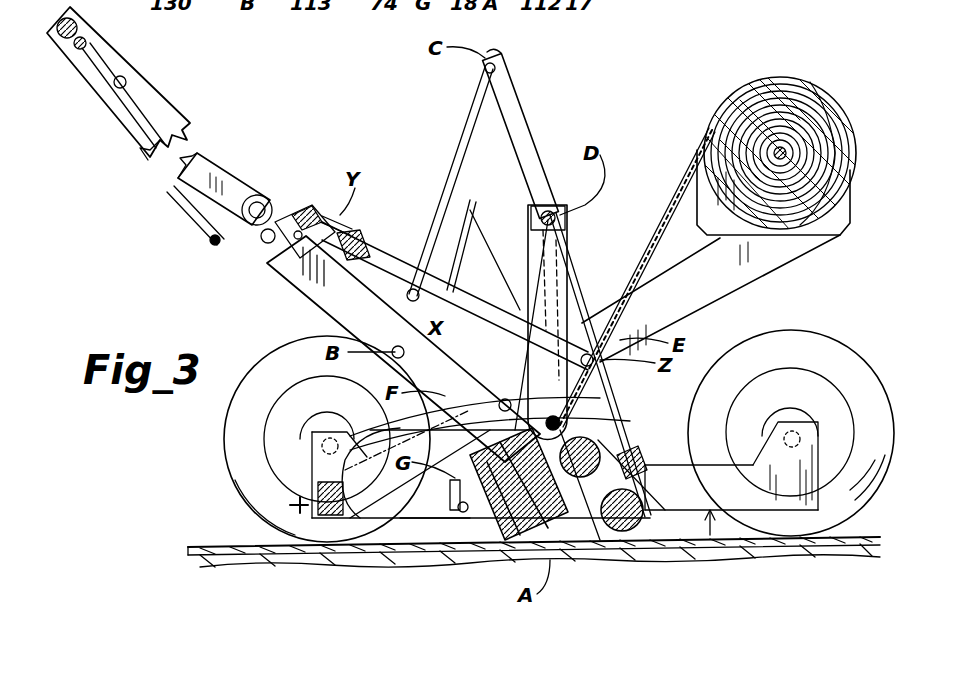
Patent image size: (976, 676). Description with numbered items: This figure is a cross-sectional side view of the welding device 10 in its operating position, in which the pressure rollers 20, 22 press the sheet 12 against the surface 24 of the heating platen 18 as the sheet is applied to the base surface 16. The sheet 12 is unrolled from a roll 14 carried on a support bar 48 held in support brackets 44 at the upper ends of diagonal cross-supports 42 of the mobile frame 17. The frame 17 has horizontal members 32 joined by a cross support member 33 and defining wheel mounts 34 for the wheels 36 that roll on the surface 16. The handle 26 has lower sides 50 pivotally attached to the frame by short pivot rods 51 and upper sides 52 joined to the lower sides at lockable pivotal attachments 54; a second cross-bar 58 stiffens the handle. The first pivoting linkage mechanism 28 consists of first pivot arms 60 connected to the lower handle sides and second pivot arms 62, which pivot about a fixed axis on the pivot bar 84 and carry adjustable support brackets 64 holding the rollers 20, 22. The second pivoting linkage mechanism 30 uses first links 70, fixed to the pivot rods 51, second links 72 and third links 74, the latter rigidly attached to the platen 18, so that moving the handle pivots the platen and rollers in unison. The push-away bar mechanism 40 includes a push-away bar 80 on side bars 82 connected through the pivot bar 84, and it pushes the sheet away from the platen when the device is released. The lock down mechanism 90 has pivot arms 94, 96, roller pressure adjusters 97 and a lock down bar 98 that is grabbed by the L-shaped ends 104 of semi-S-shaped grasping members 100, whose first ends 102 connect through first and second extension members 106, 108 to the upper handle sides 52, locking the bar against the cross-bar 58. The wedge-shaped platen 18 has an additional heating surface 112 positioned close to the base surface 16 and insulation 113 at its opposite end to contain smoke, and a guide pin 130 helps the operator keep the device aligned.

The welding device 10 is at (648, 38).
The sheet 12 is at (636, 277).
The roll of sheet material 14 is at (758, 78).
The base surface 16 is at (190, 547).
The mobile frame 17 is at (720, 548).
The heating platen 18 is at (520, 545).
The pressure roller 20 is at (648, 447).
The pressure roller 22 is at (640, 548).
The surface of heating platen 24 is at (605, 548).
The handle 26 is at (165, 85).
The first pivoting linkage mechanism 28 is at (517, 80).
The second pivoting linkage mechanism 30 is at (500, 405).
The horizontal member 32 is at (318, 552).
The cross support member 33 is at (275, 555).
The wheel mount 34 is at (312, 460).
The wheel 36 is at (226, 428).
The push-away bar mechanism 40 is at (565, 262).
The diagonal cross-support 42 is at (722, 282).
The support bracket 44 is at (842, 240).
The support bar 48 is at (837, 48).
The lower handle side 50 is at (325, 298).
The pivot rod 51 is at (460, 548).
The upper handle side 52 is at (137, 80).
The pivotal attachment 54 is at (225, 172).
The second cross-bar 58 is at (275, 262).
The first pivot arm 60 is at (466, 137).
The second pivot arm 62 is at (517, 130).
The adjustable support bracket 64 is at (675, 548).
The first link 70 is at (600, 398).
The second link 72 is at (505, 400).
The third link 74 is at (400, 425).
The push-away bar 80 is at (630, 421).
The side bar 82 is at (530, 273).
The pivot bar 84 is at (557, 207).
The lock down mechanism 90 is at (445, 268).
The first pivot arm of lock down mechanism 94 is at (450, 260).
The second pivot arm of lock down mechanism 96 is at (390, 257).
The roller pressure adjuster 97 is at (345, 215).
The lock down bar 98 is at (322, 205).
The grasping member 100 is at (258, 198).
The first end of grasping member 102 is at (215, 238).
The L-shaped end 104 is at (303, 200).
The first extension member 106 is at (142, 152).
The second extension member 108 is at (108, 45).
The heating surface 112 is at (560, 548).
The insulation 113 is at (470, 520).
The guide pin 130 is at (290, 505).